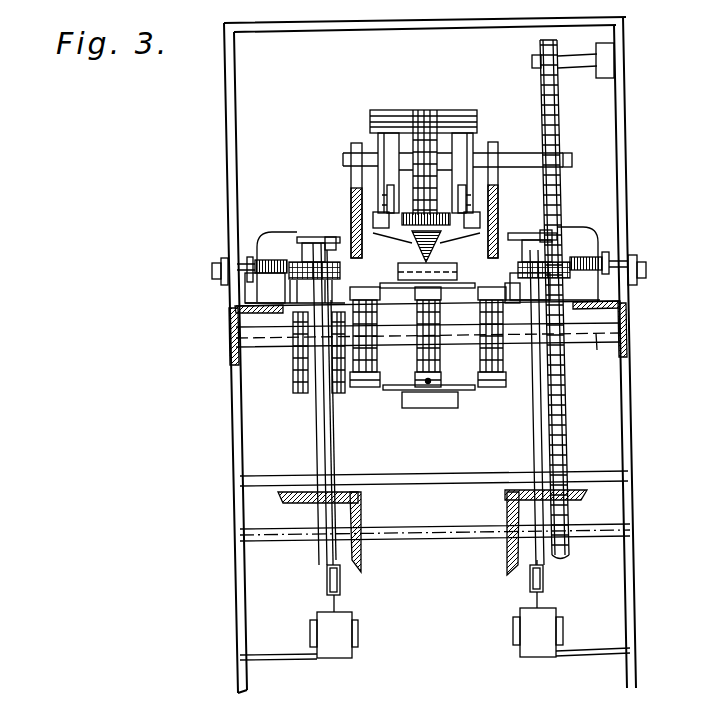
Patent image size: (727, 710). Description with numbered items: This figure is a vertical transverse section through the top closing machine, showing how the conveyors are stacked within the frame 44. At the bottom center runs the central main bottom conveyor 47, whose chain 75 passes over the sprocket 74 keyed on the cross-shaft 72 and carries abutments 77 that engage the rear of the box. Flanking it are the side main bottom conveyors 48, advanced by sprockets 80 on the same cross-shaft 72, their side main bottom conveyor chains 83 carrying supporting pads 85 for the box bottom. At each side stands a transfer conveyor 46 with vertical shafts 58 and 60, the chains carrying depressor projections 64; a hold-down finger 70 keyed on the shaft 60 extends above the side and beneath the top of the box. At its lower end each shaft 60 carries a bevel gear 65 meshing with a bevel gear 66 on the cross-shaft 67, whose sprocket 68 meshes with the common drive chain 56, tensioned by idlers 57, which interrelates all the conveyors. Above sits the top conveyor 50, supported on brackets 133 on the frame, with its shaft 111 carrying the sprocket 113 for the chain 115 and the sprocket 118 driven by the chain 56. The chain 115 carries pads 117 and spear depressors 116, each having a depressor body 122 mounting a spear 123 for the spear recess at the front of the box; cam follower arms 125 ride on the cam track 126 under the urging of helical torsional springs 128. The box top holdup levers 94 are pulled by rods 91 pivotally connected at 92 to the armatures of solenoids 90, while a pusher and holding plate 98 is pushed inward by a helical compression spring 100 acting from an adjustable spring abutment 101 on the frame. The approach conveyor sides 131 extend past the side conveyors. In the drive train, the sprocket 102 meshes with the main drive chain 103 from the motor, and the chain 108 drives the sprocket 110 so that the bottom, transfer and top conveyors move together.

The frame 44 is at (232, 450).
The transfer conveyor 46 is at (297, 242).
The central main bottom conveyor 47 is at (428, 384).
The side main bottom conveyor 48 is at (346, 399).
The top conveyor 50 is at (437, 103).
The drive chain 56 is at (560, 138).
The idler 57 is at (540, 52).
The vertical shaft 58 is at (422, 288).
The vertical shaft 60 is at (315, 426).
The depressor projection 64 is at (331, 237).
The bevel gear 65 is at (288, 500).
The bevel gear 66 is at (363, 516).
The cross-shaft 67 is at (437, 534).
The sprocket 68 is at (562, 536).
The hold-down finger 70 is at (320, 238).
The cross-shaft 72 is at (596, 350).
The sprocket 74 is at (433, 336).
The chain 75 is at (420, 366).
The abutment 77 is at (457, 268).
The sprocket 80 is at (370, 330).
The side main bottom conveyor chain 83 is at (482, 346).
The supporting pad 85 is at (386, 283).
The solenoid 90 is at (352, 640).
The rod 91 is at (336, 560).
The pivotal connection 92 is at (327, 578).
The box top holdup lever 94 is at (340, 275).
The pusher and holding plate 98 is at (350, 245).
The helical compression spring 100 is at (272, 260).
The adjustable spring abutment 101 is at (242, 272).
The sprocket 102 is at (296, 355).
The main drive chain 103 is at (300, 368).
The chain 108 is at (331, 392).
The sprocket 110 is at (335, 400).
The shaft 111 is at (508, 158).
The sprocket 113 is at (386, 148).
The chain 115 is at (470, 150).
The spear depressor 116 is at (432, 244).
The pad 117 is at (460, 112).
The sprocket 118 is at (572, 166).
The depressor body 122 is at (426, 227).
The spear 123 is at (418, 244).
The cam follower arm 125 is at (386, 190).
The cam track 126 is at (362, 160).
The helical torsional spring 128 is at (443, 226).
The side 131 is at (520, 303).
The bracket 133 is at (356, 176).